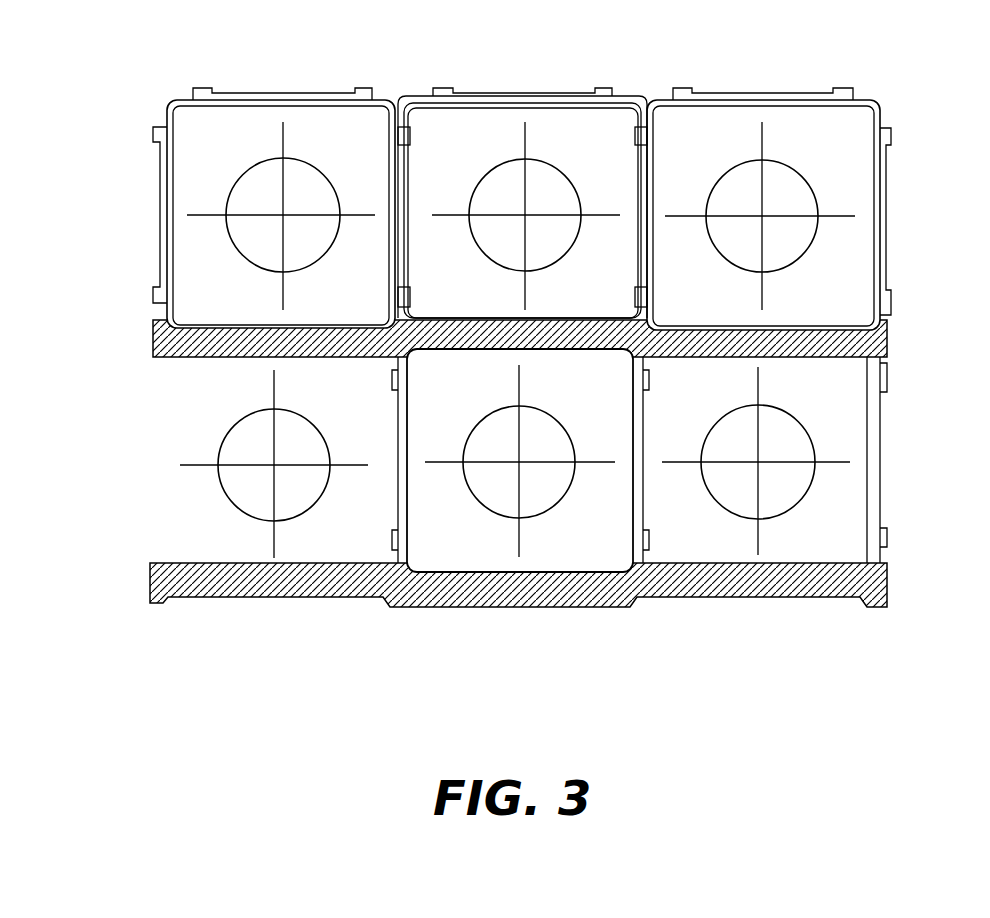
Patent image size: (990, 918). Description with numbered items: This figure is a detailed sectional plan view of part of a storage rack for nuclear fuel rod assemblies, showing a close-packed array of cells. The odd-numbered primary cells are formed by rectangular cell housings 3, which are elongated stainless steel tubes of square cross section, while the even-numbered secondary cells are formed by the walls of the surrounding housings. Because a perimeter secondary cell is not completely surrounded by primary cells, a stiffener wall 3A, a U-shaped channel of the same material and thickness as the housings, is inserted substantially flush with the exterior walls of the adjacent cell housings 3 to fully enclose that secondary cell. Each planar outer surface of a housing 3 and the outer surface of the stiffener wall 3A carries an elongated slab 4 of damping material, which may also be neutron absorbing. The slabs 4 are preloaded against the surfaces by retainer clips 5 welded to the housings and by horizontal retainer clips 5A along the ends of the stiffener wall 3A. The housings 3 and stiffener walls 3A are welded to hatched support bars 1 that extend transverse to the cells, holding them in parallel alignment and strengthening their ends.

The support bar 1 is at (166, 333).
The cell housing 3 is at (253, 110).
The stiffener wall 3A is at (485, 108).
The slab 4 is at (163, 213).
The retainer clip 5 is at (165, 108).
The horizontal retainer clip 5A is at (440, 88).